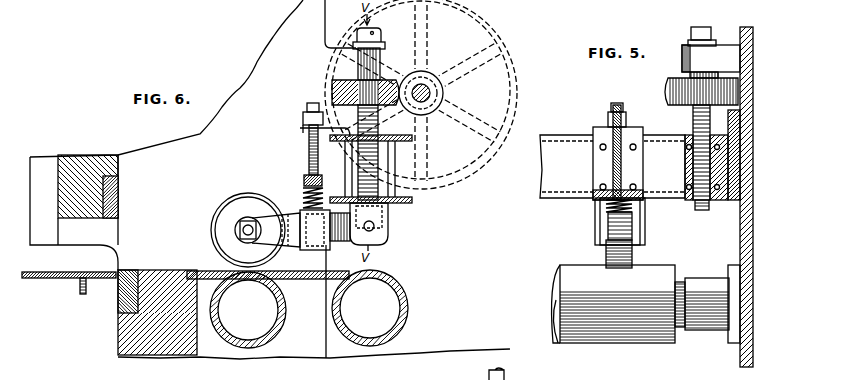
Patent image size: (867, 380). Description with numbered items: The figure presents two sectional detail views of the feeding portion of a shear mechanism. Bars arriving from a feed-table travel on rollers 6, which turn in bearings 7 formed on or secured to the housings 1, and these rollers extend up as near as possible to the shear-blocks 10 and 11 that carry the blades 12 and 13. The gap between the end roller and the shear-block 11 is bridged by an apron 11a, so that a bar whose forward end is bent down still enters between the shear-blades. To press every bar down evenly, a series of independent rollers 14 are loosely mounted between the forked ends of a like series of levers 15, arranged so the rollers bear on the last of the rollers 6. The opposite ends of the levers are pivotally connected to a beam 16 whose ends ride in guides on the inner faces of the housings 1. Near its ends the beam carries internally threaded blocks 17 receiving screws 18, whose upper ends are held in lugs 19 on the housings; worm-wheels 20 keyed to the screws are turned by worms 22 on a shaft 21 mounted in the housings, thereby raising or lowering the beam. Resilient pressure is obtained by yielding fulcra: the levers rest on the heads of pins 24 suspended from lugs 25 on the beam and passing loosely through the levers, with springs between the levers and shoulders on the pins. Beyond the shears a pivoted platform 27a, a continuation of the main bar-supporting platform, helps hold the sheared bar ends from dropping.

In FIG. 6, the housings 1 is at (193, 135).
In FIG. 5, the housings 1 is at (740, 224).
In FIG. 6, the rollers 6 is at (332, 312).
In FIG. 5, the rollers 6 is at (640, 304).
In FIG. 5, the bearings 7 is at (734, 265).
In FIG. 6, the shear-block 10 is at (120, 163).
In FIG. 6, the shear-block 11 is at (172, 270).
In FIG. 6, the apron 11a is at (211, 263).
In FIG. 6, the blade 12 is at (118, 192).
In FIG. 6, the blade 13 is at (133, 270).
In FIG. 6, the independent rollers 14 is at (240, 198).
In FIG. 5, the independent rollers 14 is at (633, 250).
In FIG. 6, the levers 15 is at (285, 242).
In FIG. 6, the beam 16 is at (397, 158).
In FIG. 5, the beam 16 is at (612, 166).
In FIG. 5, the blocks 17 is at (685, 168).
In FIG. 6, the screws 18 is at (380, 116).
In FIG. 5, the screws 18 is at (693, 124).
In FIG. 6, the lugs 19 is at (360, 48).
In FIG. 5, the lugs 19 is at (711, 52).
In FIG. 6, the worm-wheels 20 is at (334, 90).
In FIG. 5, the worm-wheels 20 is at (666, 92).
In FIG. 6, the shaft 21 is at (430, 93).
In FIG. 6, the worms 22 is at (437, 76).
In FIG. 6, the pins 24 is at (309, 148).
In FIG. 6, the lugs 25 is at (306, 118).
In FIG. 5, the lugs 25 is at (608, 118).
In FIG. 6, the platform 27a is at (83, 273).